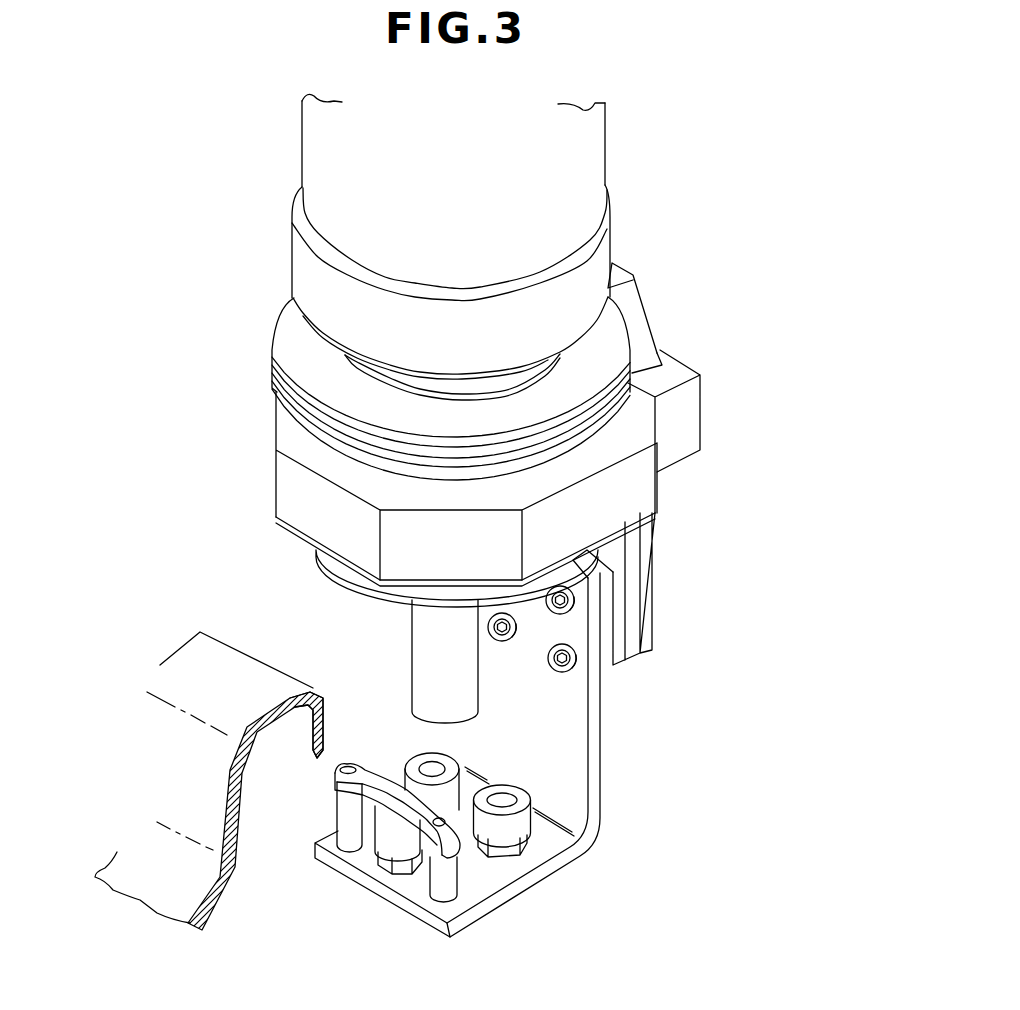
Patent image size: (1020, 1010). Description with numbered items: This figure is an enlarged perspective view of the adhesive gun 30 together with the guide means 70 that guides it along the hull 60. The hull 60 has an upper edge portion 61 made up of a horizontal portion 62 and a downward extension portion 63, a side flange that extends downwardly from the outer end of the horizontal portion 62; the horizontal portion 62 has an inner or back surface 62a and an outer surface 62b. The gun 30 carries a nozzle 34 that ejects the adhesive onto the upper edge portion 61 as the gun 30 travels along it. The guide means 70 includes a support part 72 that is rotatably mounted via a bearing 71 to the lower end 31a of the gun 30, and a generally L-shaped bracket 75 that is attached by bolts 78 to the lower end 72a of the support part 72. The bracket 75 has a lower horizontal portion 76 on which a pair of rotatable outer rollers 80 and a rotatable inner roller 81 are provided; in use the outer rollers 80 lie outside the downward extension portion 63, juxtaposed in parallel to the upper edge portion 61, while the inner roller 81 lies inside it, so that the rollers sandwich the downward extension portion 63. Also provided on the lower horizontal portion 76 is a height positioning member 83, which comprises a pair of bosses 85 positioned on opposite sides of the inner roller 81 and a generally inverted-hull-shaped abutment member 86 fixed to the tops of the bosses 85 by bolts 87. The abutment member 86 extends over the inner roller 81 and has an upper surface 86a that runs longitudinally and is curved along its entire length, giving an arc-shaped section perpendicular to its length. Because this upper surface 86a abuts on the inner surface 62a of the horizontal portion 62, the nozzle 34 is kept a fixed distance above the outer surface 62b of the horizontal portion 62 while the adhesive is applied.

The gun 30 is at (626, 152).
The lower end of the gun 31a is at (570, 222).
The support part 72 is at (663, 315).
The bearing 71 is at (357, 455).
The guide means 70 is at (778, 553).
The nozzle 34 is at (457, 676).
The bolts 78 is at (573, 650).
The lower end of the support part 72a is at (633, 628).
The L-shaped bracket 75 is at (603, 790).
The lower horizontal portion 76 is at (542, 843).
The bosses 85 is at (337, 823).
The bolts 87 is at (347, 768).
The outer rollers 80 is at (457, 762).
The inner roller 81 is at (380, 870).
The height positioning member 83 is at (397, 860).
The abutment member 86 is at (345, 866).
The upper surface 86a is at (387, 777).
The hull 60 is at (182, 672).
The upper edge portion 61 is at (333, 628).
The horizontal portion 62 is at (230, 673).
The inner surface 62a is at (240, 773).
The outer surface 62b is at (187, 690).
The downward extension portion 63 is at (293, 693).